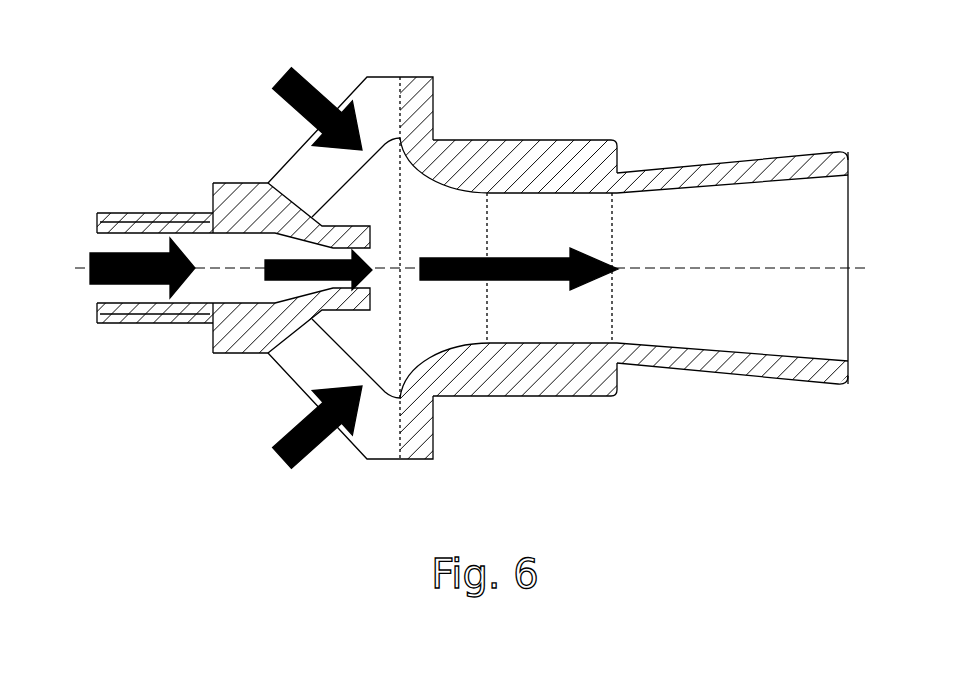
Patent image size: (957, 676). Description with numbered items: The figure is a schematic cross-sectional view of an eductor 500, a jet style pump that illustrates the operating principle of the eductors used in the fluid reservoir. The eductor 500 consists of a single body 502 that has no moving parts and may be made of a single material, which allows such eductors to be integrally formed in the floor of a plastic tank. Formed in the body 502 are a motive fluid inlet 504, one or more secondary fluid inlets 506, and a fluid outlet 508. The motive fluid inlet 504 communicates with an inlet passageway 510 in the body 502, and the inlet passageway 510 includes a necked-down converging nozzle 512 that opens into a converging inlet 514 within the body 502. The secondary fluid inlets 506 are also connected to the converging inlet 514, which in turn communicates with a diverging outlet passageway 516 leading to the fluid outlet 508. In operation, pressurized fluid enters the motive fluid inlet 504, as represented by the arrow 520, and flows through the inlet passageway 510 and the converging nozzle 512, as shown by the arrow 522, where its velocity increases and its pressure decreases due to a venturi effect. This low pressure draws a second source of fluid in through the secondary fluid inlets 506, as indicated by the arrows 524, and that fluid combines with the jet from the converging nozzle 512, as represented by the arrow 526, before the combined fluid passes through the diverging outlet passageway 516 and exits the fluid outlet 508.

The eductor 500 is at (478, 338).
The body 502 is at (503, 165).
The motive fluid inlet 504 is at (98, 237).
The secondary fluid inlets 506 is at (372, 103).
The fluid outlet 508 is at (849, 226).
The inlet passageway 510 is at (232, 303).
The converging nozzle 512 is at (305, 245).
The converging inlet 514 is at (425, 313).
The diverging outlet passageway 516 is at (757, 310).
The arrow 520 is at (118, 288).
The arrow 522 is at (273, 260).
The arrows 524 is at (273, 105).
The arrow 526 is at (523, 265).